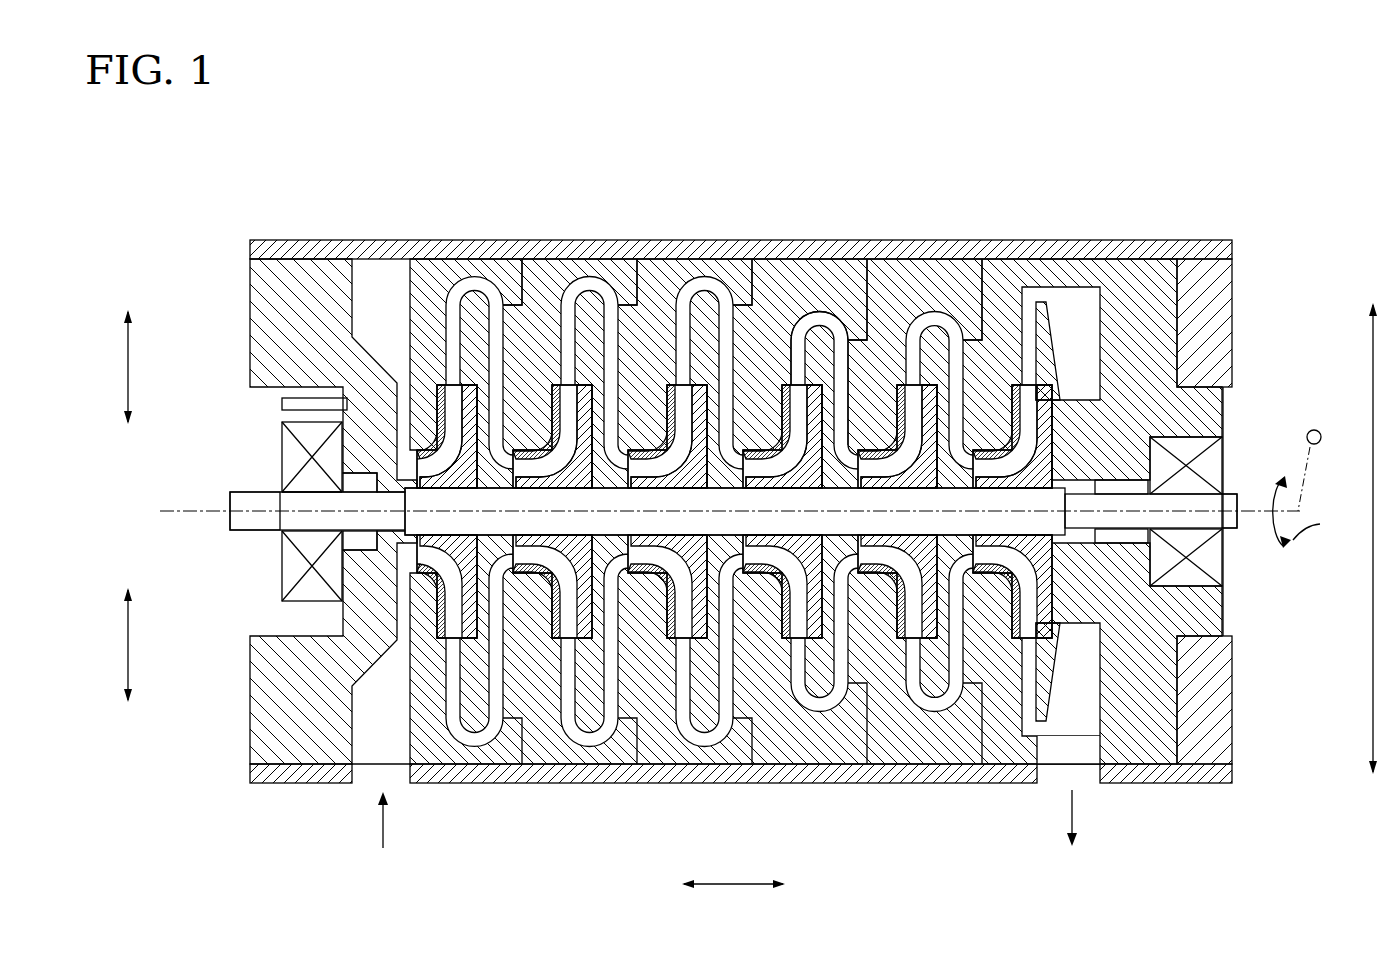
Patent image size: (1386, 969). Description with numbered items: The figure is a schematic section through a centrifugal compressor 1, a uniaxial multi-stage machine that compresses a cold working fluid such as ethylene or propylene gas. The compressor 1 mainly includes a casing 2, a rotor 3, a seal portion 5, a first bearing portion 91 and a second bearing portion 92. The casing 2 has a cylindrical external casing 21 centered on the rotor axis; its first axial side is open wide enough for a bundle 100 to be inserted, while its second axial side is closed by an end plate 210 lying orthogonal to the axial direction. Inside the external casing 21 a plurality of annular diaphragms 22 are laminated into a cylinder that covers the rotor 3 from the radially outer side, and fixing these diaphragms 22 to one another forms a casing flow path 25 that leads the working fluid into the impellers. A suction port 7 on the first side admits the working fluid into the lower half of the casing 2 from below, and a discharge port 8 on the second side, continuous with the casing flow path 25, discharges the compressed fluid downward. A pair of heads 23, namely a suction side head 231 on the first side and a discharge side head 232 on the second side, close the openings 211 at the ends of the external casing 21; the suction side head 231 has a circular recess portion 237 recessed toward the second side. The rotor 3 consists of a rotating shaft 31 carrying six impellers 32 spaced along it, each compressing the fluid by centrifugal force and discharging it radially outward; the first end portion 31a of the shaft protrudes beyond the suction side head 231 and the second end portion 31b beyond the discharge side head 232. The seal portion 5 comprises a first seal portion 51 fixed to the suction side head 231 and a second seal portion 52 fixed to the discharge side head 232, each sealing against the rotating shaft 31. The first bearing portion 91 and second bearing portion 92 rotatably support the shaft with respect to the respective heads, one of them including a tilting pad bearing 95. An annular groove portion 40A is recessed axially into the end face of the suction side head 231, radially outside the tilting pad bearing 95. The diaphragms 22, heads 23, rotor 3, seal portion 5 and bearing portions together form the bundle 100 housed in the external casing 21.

The centrifugal compressor 1 is at (1072, 203).
The casing 2 is at (866, 230).
The rotor 3 is at (918, 384).
The seal portion 5 is at (830, 367).
The suction port 7 is at (402, 775).
The discharge port 8 is at (1060, 740).
The external casing 21 is at (700, 295).
The diaphragm 22 is at (424, 290).
The head 23 is at (742, 419).
The casing flow path 25 is at (812, 316).
The rotating shaft 31 is at (773, 530).
The first end portion 31a is at (240, 497).
The second end portion 31b is at (1240, 502).
The impeller 32 is at (478, 645).
The annular groove portion 40A is at (270, 405).
The first seal portion 51 is at (357, 462).
The second seal portion 52 is at (1128, 470).
The first bearing portion 91 is at (255, 568).
The second bearing portion 92 is at (1245, 550).
The tilting pad bearing 95 is at (284, 491).
The bundle 100 is at (300, 250).
The end plate 210 is at (1233, 688).
The opening 211 is at (1226, 626).
The suction side head 231 is at (262, 292).
The discharge side head 232 is at (1172, 312).
The recess portion 237 is at (272, 625).